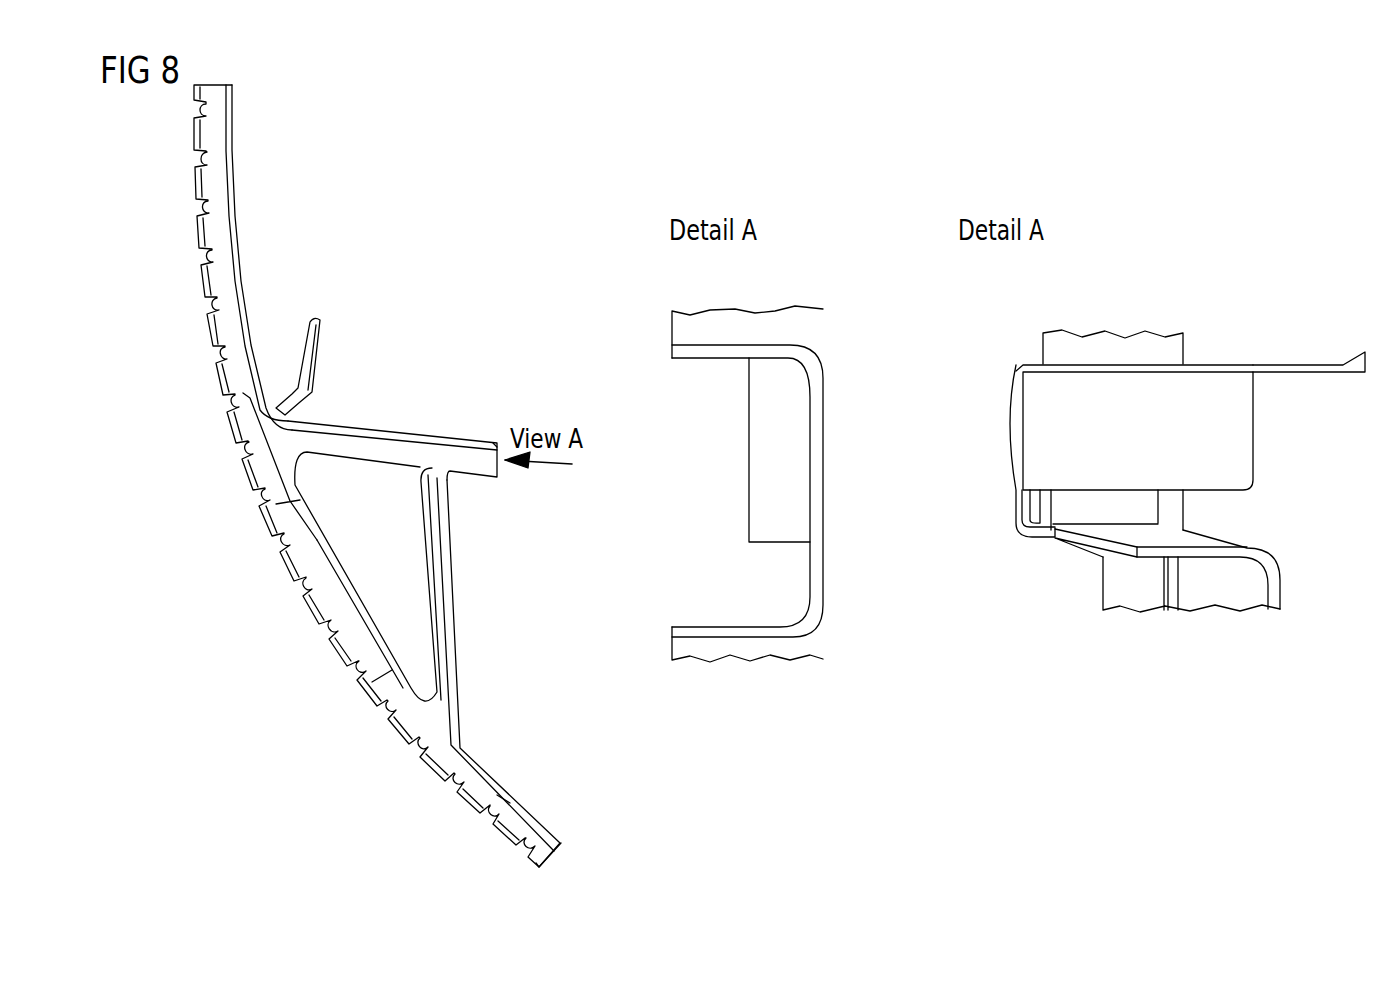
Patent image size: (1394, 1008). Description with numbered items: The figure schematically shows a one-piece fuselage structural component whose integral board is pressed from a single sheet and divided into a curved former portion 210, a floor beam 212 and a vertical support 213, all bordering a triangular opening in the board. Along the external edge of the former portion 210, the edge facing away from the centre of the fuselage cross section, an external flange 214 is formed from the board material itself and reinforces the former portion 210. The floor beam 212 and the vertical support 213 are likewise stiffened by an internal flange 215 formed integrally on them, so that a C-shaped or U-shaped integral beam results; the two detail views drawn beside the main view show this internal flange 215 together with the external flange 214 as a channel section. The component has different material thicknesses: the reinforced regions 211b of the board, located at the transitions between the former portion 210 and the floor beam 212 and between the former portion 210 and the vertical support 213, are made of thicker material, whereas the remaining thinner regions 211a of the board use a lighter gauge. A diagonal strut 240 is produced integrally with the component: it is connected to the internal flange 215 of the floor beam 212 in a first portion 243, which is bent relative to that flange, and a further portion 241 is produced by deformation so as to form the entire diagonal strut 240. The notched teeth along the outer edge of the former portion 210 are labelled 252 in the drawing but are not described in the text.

The former portion 210 is at (262, 549).
The thinner regions of the board 211a is at (212, 230).
The reinforced regions of the board 211b is at (267, 470).
The floor beam 212 is at (357, 440).
The vertical support 213 is at (437, 562).
The external flange 214 is at (760, 434).
The internal flange 215 is at (700, 630).
The diagonal strut 240 is at (318, 343).
The further portion of the diagonal strut 241 is at (1295, 368).
The first portion of the diagonal strut 243 is at (786, 323).
The notches 252 is at (200, 207).